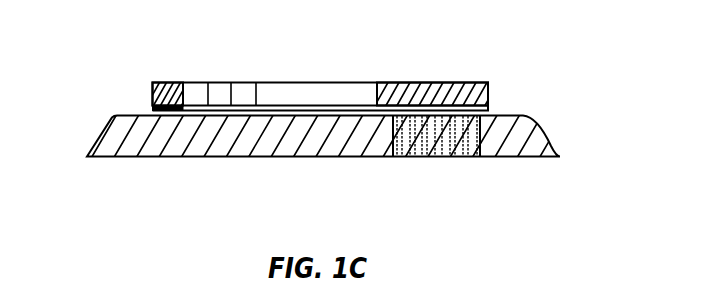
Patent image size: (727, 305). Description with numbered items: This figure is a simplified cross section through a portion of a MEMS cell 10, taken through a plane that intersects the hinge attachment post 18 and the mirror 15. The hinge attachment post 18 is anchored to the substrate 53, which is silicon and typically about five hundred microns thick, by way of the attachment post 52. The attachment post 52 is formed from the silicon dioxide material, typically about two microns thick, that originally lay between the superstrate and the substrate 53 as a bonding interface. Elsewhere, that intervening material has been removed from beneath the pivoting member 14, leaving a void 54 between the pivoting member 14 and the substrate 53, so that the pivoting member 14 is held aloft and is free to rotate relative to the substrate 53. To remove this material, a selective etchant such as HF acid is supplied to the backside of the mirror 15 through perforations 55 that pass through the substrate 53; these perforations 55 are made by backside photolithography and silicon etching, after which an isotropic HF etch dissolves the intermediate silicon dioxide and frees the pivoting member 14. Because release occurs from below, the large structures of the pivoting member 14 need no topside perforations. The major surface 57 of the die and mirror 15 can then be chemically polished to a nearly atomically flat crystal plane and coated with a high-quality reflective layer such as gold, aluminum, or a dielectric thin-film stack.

The device 10 is at (312, 112).
The pivoting member 14 is at (431, 65).
The mirror 15 is at (482, 82).
The hinge attachment post 18 is at (170, 82).
The attachment post 52 is at (152, 111).
The substrate 53 is at (92, 148).
The void 54 is at (491, 109).
The perforations 55 is at (398, 158).
The major surface 57 is at (433, 76).